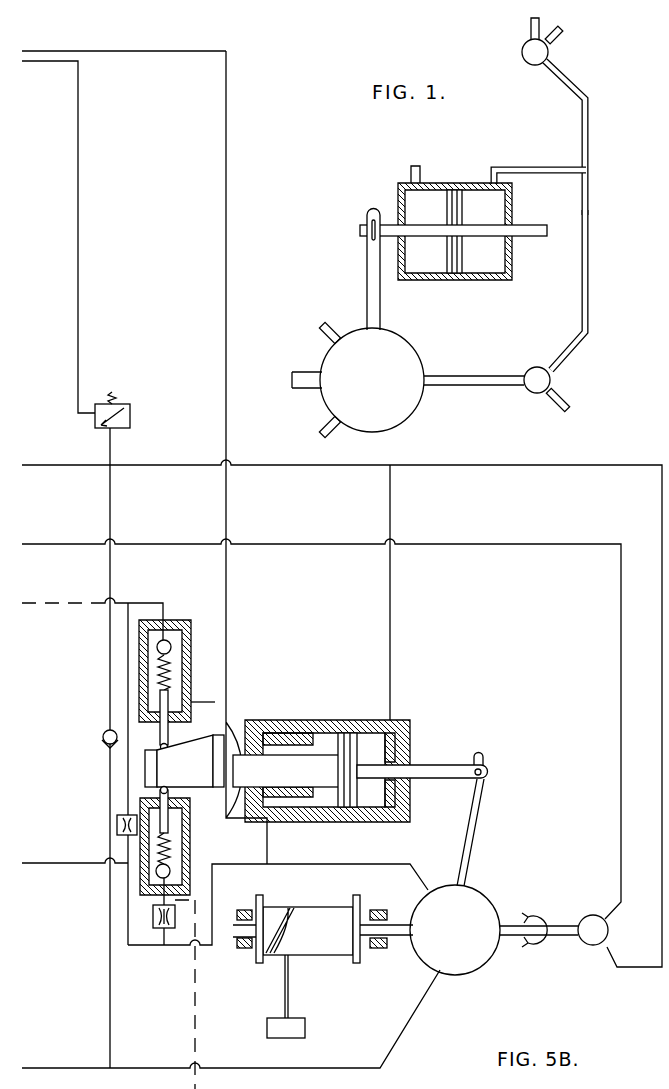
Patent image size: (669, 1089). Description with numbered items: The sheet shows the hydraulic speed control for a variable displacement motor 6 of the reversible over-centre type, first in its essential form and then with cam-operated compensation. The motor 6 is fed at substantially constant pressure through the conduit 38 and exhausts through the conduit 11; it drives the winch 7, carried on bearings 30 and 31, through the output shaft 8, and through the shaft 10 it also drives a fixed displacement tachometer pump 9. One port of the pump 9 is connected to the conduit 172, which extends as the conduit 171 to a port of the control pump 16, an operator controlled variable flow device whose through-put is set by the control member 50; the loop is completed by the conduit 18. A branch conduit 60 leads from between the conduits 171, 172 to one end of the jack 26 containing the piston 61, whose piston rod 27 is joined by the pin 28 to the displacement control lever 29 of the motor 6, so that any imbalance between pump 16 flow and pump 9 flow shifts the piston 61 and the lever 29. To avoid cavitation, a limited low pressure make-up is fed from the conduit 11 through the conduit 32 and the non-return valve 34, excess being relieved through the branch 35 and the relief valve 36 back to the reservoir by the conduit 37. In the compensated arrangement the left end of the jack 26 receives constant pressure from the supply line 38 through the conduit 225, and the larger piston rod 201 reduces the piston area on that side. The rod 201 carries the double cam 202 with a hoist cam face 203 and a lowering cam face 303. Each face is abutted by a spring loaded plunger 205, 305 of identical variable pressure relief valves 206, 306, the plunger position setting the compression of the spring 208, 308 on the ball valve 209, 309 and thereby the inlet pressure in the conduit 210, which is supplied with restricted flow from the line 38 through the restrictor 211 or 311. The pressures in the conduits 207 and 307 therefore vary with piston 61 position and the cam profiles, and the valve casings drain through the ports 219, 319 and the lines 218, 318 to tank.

In FIG. 1, the variable displacement motor 6 is at (413, 366).
In FIG. 5B, the variable displacement motor 6 is at (482, 890).
In FIG. 5B, the winch 7 is at (310, 915).
In FIG. 1, the output shaft 8 is at (301, 377).
In FIG. 5B, the output shaft 8 is at (400, 930).
In FIG. 1, the tachometer pump 9 is at (531, 391).
In FIG. 5B, the tachometer pump 9 is at (590, 946).
In FIG. 1, the shaft 10 is at (476, 374).
In FIG. 5B, the shaft 10 is at (560, 925).
In FIG. 1, the conduit 11 is at (322, 420).
In FIG. 5B, the conduit 11 is at (415, 1015).
In FIG. 1, the control pump 16 is at (531, 60).
In FIG. 5B, the conduit 18 is at (572, 545).
In FIG. 1, the jack 26 is at (513, 277).
In FIG. 5B, the jack 26 is at (411, 740).
In FIG. 1, the piston rod 27 is at (392, 225).
In FIG. 5B, the piston rod 27 is at (440, 767).
In FIG. 5B, the pin 28 is at (486, 763).
In FIG. 1, the displacement control lever 29 is at (381, 308).
In FIG. 5B, the displacement control lever 29 is at (470, 832).
In FIG. 5B, the bearing 30 is at (240, 910).
In FIG. 5B, the bearing 31 is at (382, 910).
In FIG. 5B, the conduit 32 is at (110, 1032).
In FIG. 5B, the non-return valve 34 is at (103, 737).
In FIG. 5B, the branch 35 is at (111, 452).
In FIG. 5B, the relief valve 36 is at (131, 413).
In FIG. 5B, the conduit 37 is at (78, 340).
In FIG. 1, the conduit 38 is at (330, 328).
In FIG. 1, the control member 50 is at (530, 33).
In FIG. 1, the branch conduit 60 is at (541, 154).
In FIG. 5B, the branch conduit 60 is at (392, 652).
In FIG. 1, the piston 61 is at (455, 186).
In FIG. 5B, the piston 61 is at (347, 745).
In FIG. 1, the conduit 171 is at (590, 137).
In FIG. 1, the conduit 172 is at (590, 200).
In FIG. 5B, the conduit 172 is at (585, 465).
In FIG. 5B, the piston rod 201 is at (282, 768).
In FIG. 5B, the double cam 202 is at (137, 763).
In FIG. 5B, the cam face 203 is at (197, 747).
In FIG. 5B, the plunger 205 is at (158, 735).
In FIG. 5B, the variable pressure relief valve 206 is at (191, 626).
In FIG. 5B, the conduit 207 is at (95, 601).
In FIG. 5B, the spring 208 is at (172, 655).
In FIG. 5B, the ball valve 209 is at (168, 640).
In FIG. 5B, the conduit 210 is at (160, 587).
In FIG. 5B, the restrictor 211 is at (116, 826).
In FIG. 5B, the line 218 is at (215, 702).
In FIG. 5B, the port 219 is at (193, 700).
In FIG. 5B, the conduit 225 is at (268, 853).
In FIG. 5B, the cam face 303 is at (194, 782).
In FIG. 5B, the plunger 305 is at (158, 791).
In FIG. 5B, the variable pressure relief valve 306 is at (140, 868).
In FIG. 5B, the line 307 is at (196, 998).
In FIG. 5B, the spring 308 is at (160, 848).
In FIG. 5B, the ball valve 309 is at (160, 877).
In FIG. 5B, the restrictor 311 is at (152, 943).
In FIG. 5B, the line 318 is at (224, 818).
In FIG. 5B, the port 319 is at (188, 807).